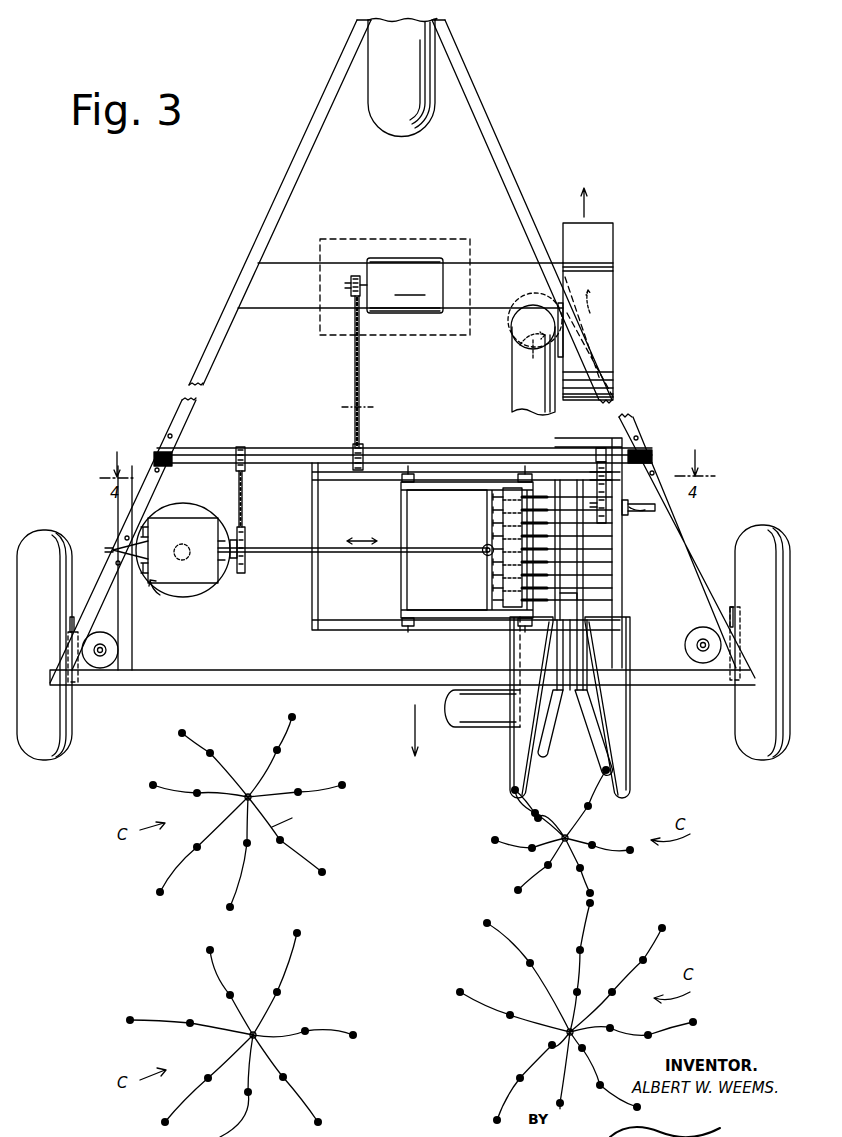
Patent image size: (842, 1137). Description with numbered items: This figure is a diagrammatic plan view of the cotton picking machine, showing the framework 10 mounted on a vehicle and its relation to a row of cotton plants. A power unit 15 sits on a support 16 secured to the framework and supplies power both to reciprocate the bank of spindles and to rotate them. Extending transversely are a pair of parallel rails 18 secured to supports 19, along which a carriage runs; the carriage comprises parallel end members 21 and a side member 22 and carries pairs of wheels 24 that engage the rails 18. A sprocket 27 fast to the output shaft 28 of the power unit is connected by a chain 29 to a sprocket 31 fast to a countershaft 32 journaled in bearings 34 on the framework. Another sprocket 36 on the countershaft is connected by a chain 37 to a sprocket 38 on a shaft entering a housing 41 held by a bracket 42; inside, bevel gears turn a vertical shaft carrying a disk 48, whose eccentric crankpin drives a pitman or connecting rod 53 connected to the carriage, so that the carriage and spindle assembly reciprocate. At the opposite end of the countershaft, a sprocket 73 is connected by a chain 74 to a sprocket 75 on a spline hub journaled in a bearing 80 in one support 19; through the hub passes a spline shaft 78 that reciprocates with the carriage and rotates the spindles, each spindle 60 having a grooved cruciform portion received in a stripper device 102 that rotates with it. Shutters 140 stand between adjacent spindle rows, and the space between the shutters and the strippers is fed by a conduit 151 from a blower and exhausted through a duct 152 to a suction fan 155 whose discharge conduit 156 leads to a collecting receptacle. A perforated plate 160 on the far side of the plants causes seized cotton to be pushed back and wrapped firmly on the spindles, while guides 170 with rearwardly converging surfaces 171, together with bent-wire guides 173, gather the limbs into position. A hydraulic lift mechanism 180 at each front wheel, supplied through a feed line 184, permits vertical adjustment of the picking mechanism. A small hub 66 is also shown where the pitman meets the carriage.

The framework 10 is at (244, 672).
The power unit 15 is at (400, 275).
The support 16 is at (480, 268).
The rails 18 is at (322, 476).
The supports 19 is at (320, 660).
The end members 21 is at (440, 490).
The side member 22 is at (399, 518).
The wheels 24 is at (408, 472).
The sprocket 27 is at (352, 285).
The output shaft 28 is at (357, 276).
The chain 29 is at (361, 362).
The sprocket 31 is at (362, 446).
The countershaft 32 is at (272, 447).
The bearings 34 is at (160, 453).
The sprocket 36 is at (240, 447).
The chain 37 is at (243, 505).
The sprocket 38 is at (243, 568).
The housing 41 is at (183, 550).
The bracket 42 is at (113, 550).
The disk 48 is at (192, 596).
The pitman or connecting rod 53 is at (372, 552).
The pivot hub 66 is at (486, 545).
The sprocket 73 is at (600, 450).
The chain 74 is at (612, 482).
The sprocket 75 is at (600, 524).
The spline shaft 78 is at (660, 507).
The bearing 80 is at (631, 517).
The stripper device 102 is at (505, 494).
The shutter or gate 140 is at (538, 552).
The conduit 151 is at (472, 727).
The duct 152 is at (512, 381).
The suction fan 155 is at (603, 336).
The conduit 156 is at (600, 248).
The plate 160 is at (578, 560).
The spindle 60 is at (572, 600).
The guides 170 is at (512, 760).
The rearwardly converging surfaces 171 is at (596, 740).
The guides 173 is at (556, 708).
The hydraulic lift mechanism 180 is at (105, 667).
The feed line 184 is at (106, 650).